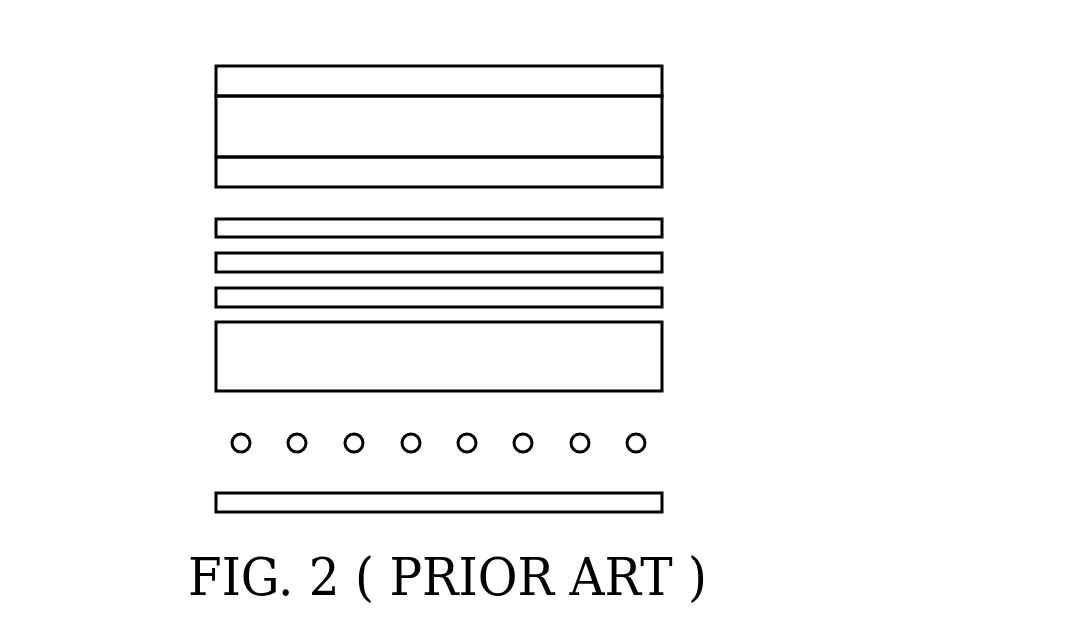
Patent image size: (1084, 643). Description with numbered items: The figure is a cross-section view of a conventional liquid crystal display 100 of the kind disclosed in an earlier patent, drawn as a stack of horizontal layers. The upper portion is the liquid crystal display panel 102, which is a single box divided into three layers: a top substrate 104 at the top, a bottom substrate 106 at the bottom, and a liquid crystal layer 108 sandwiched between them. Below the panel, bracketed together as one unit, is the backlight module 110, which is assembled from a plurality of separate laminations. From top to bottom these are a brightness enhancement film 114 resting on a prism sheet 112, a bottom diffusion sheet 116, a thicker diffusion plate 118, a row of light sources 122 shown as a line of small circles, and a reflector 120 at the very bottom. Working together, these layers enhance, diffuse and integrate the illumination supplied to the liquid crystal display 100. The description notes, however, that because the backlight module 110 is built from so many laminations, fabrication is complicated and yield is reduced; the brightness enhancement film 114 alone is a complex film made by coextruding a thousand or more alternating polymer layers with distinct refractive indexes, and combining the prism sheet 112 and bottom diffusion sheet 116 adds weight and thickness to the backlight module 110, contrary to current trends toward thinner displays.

The liquid crystal display 100 is at (93, 92).
The liquid crystal display panel 102 is at (193, 65).
The top substrate 104 is at (662, 78).
The bottom substrate 106 is at (662, 172).
The liquid crystal layer 108 is at (662, 126).
The backlight module 110 is at (193, 218).
The prism sheet 112 is at (662, 261).
The brightness enhancement film 114 is at (662, 226).
The bottom diffusion sheet 116 is at (662, 296).
The diffusion plate 118 is at (662, 354).
The reflector 120 is at (662, 502).
The light source 122 is at (645, 441).